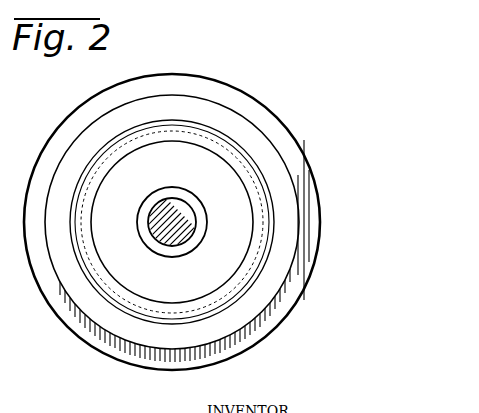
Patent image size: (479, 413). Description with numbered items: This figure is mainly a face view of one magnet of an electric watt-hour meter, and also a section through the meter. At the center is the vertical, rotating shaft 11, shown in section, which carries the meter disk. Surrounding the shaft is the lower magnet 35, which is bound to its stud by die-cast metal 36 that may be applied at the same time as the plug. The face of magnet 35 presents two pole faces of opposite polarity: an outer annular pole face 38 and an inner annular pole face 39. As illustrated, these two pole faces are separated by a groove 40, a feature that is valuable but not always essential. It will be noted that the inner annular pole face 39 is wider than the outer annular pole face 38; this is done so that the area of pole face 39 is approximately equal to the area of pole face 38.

The shaft 11 is at (173, 199).
The lower magnet 35 is at (151, 222).
The die-cast metal 36 is at (292, 302).
The outer annular pole face 38 is at (273, 170).
The inner annular pole face 39 is at (223, 173).
The groove 40 is at (90, 172).